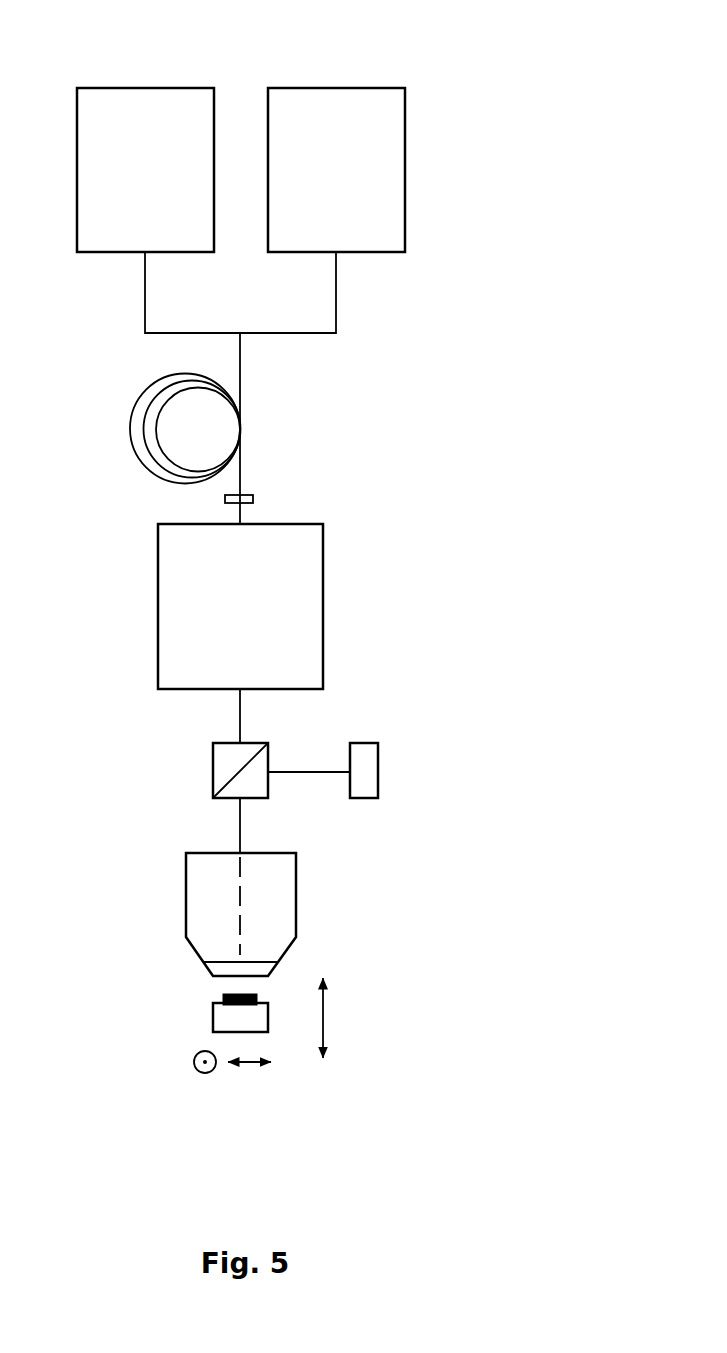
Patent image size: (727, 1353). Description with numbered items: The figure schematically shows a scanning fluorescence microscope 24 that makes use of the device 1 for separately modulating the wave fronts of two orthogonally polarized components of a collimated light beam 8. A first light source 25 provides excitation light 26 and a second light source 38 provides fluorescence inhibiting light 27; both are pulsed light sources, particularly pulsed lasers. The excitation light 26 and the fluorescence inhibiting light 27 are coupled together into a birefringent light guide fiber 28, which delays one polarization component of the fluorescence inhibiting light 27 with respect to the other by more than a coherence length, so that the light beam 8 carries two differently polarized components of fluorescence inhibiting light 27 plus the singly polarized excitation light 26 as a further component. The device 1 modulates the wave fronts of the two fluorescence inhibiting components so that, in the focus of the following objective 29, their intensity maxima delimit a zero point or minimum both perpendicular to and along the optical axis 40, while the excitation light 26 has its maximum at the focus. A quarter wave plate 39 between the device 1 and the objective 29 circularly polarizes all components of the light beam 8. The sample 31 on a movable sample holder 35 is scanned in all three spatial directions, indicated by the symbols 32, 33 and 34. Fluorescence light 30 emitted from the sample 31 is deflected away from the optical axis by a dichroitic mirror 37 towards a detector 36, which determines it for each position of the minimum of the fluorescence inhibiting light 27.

The device 1 is at (328, 598).
The light beam 8 is at (243, 470).
The scanning fluorescence microscope 24 is at (490, 305).
The first light source 25 is at (124, 86).
The second light source 38 is at (356, 86).
The excitation light 26 is at (143, 290).
The fluorescence inhibiting light 27 is at (337, 285).
The birefringent light guide fiber 28 is at (125, 438).
The quarter wave plate 39 is at (258, 495).
The fluorescence light 30 is at (303, 772).
The dichroitic mirror 37 is at (210, 768).
The detector 36 is at (382, 777).
The objective 29 is at (185, 908).
The optical axis 40 is at (245, 903).
The sample 31 is at (253, 992).
The movable sample holder 35 is at (210, 1018).
The scanning direction symbol 34 is at (328, 1012).
The scanning direction symbol 32 is at (204, 1076).
The scanning direction symbol 33 is at (249, 1068).